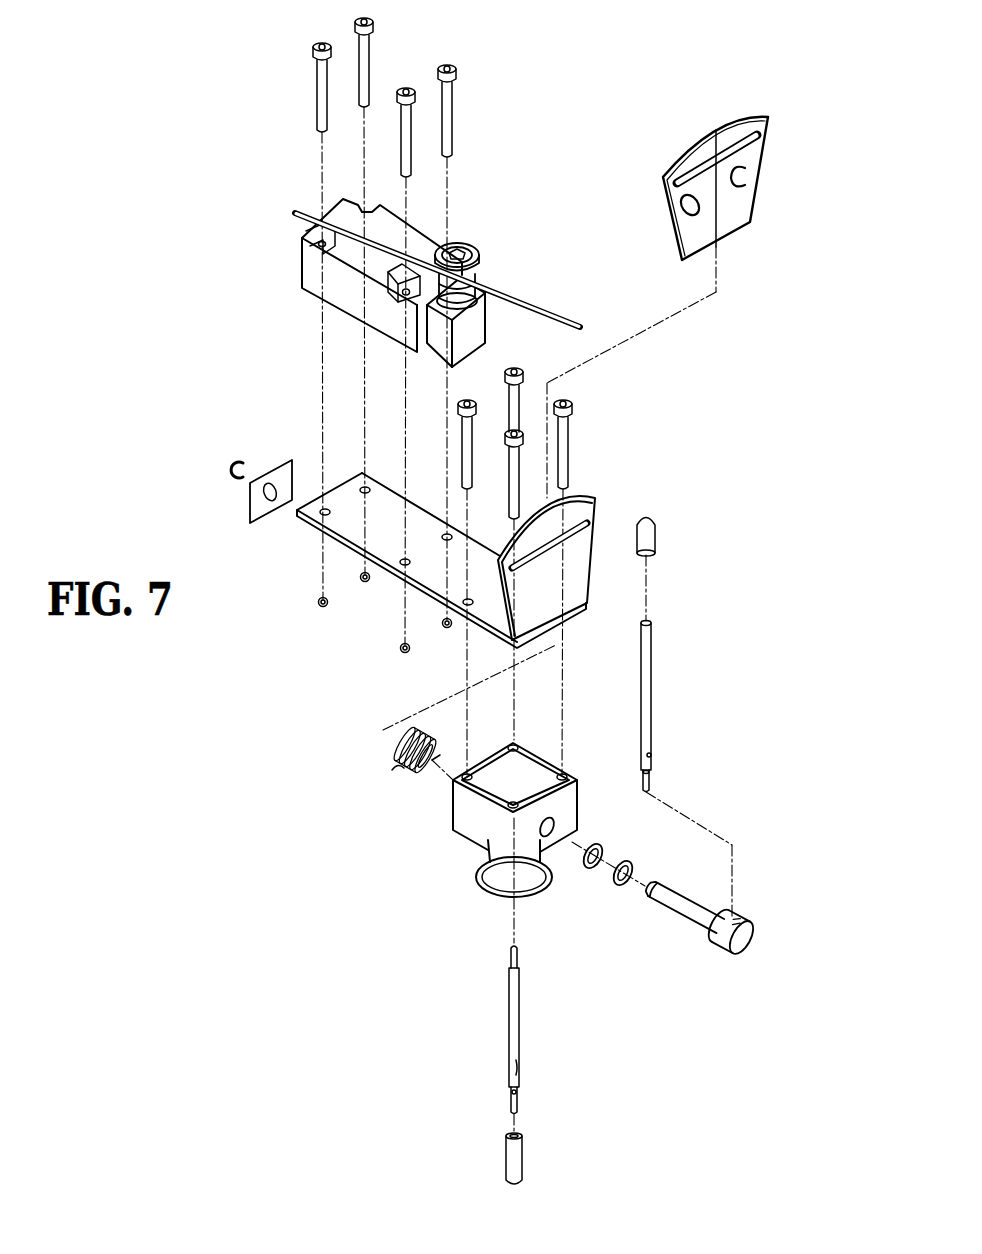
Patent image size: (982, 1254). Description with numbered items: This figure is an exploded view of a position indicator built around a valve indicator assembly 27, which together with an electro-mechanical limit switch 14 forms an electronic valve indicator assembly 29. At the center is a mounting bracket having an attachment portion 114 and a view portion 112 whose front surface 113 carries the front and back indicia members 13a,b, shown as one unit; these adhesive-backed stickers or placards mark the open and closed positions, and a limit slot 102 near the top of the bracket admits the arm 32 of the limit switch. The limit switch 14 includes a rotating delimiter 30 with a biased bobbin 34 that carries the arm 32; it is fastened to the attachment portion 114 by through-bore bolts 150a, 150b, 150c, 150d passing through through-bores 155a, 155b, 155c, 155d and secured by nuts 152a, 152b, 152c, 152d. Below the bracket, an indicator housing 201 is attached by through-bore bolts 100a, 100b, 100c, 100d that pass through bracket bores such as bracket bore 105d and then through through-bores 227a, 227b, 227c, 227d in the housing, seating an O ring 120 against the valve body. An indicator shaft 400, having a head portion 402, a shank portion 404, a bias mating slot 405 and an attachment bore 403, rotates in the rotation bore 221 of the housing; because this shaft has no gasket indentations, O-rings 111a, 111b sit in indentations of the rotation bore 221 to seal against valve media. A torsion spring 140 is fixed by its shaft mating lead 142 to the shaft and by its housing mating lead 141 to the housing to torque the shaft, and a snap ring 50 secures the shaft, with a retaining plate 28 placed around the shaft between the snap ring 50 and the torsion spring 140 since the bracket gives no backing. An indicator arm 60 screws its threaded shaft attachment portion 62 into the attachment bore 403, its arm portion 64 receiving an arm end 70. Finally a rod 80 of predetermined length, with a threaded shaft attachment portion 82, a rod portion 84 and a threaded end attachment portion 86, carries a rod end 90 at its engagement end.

The limit switch 14 is at (318, 277).
The valve indicator assembly 27 is at (782, 190).
The electronic valve indicator assembly 29 is at (608, 73).
The rotating delimiter 30 is at (489, 268).
The arm 32 is at (561, 318).
The biased bobbin 34 is at (478, 243).
The indicia members 13a,b is at (680, 153).
The retaining plate 28 is at (266, 470).
The snap ring 50 is at (240, 457).
The indicator arm 60 is at (652, 642).
The shaft attachment portion 62 is at (652, 783).
The arm portion 64 is at (650, 706).
The arm end 70 is at (650, 546).
The rod 80 is at (520, 978).
The shaft attachment portion 82 is at (510, 960).
The rod portion 84 is at (510, 1048).
The end attachment portion 86 is at (510, 1105).
The rod end 90 is at (524, 1172).
The through-bore bolt 100a is at (473, 427).
The through-bore bolt 100b is at (566, 470).
The through-bore bolt 100c is at (518, 465).
The through-bore bolt 100d is at (522, 394).
The limit slot 102 is at (596, 500).
The bracket bore 105d is at (468, 605).
The O-ring 111a is at (603, 846).
The O-ring 111b is at (655, 848).
The view portion 112 is at (600, 533).
The front surface 113 is at (573, 603).
The attachment portion 114 is at (297, 515).
The O ring 120 is at (545, 895).
The torsion spring 140 is at (416, 773).
The housing mating lead 141 is at (392, 770).
The shaft mating lead 142 is at (432, 760).
The through-bore bolt 150a is at (364, 45).
The through-bore bolt 150b is at (450, 118).
The through-bore bolt 150c is at (406, 155).
The through-bore bolt 150d is at (322, 115).
The nut 152a is at (365, 582).
The nut 152b is at (445, 628).
The nut 152c is at (403, 652).
The nut 152d is at (320, 606).
The through-bore 155a is at (365, 487).
The through-bore 155b is at (447, 534).
The through-bore 155c is at (403, 564).
The through-bore 155d is at (323, 514).
The indicator housing 201 is at (470, 843).
The rotation bore 221 is at (550, 840).
The through-bore 227a is at (515, 744).
The through-bore 227b is at (606, 750).
The through-bore 227c is at (500, 860).
The through-bore 227d is at (468, 781).
The indicator shaft 400 is at (716, 955).
The head portion 402 is at (748, 952).
The attachment bore 403 is at (735, 926).
The shank portion 404 is at (704, 914).
The bias mating slot 405 is at (662, 880).